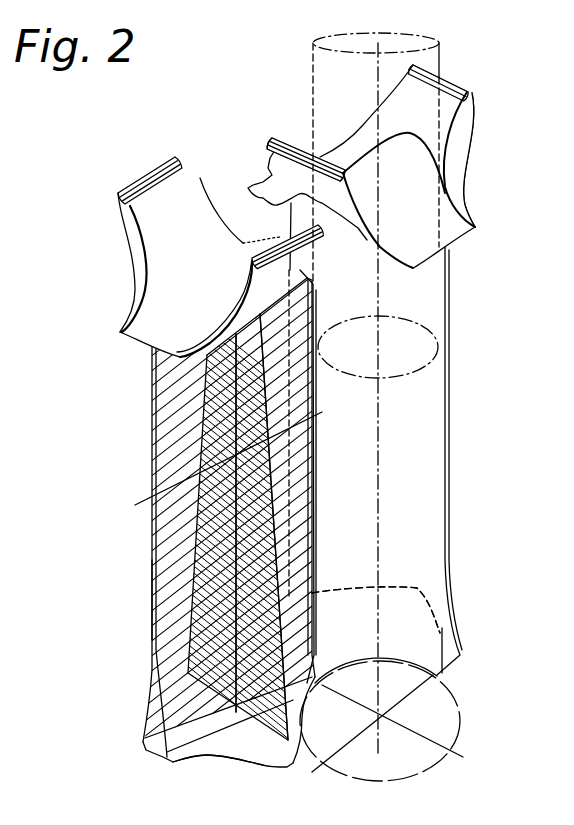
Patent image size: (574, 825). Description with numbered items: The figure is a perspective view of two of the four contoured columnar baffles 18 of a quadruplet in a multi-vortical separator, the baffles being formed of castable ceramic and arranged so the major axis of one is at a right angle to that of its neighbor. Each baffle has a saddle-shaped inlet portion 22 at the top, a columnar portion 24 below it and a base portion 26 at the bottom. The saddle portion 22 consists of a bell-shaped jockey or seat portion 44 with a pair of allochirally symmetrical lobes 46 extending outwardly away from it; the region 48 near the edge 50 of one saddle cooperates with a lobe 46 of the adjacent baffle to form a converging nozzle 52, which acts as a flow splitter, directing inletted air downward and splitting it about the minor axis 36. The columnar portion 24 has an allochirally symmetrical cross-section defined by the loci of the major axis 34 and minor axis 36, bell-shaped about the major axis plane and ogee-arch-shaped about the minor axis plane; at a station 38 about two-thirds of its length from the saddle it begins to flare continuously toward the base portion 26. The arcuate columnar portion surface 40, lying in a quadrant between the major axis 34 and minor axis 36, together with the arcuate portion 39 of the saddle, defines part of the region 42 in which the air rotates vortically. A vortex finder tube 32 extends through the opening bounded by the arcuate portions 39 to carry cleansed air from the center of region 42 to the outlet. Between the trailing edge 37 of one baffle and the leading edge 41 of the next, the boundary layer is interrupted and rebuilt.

The contoured columnar baffle 18 is at (300, 480).
The saddle-shaped inlet portion 22 is at (298, 228).
The columnar portion 24 is at (167, 580).
The base portion 26 is at (209, 756).
The vortex finder tube 32 is at (440, 52).
The major axis 34 is at (77, 625).
The minor axis 36 is at (245, 547).
The trailing edge 37 is at (315, 416).
The station 38 is at (152, 615).
The arcuate portion 39 is at (127, 220).
The columnar portion surface 40 is at (290, 452).
The leading edge 41 is at (238, 523).
The region of vortical flow 42 is at (433, 715).
The jockey portion 44 is at (193, 268).
The lobes 46 is at (128, 194).
The region 48 is at (155, 362).
The edge of the saddle portion 50 is at (286, 143).
The converging nozzle 52 is at (273, 215).